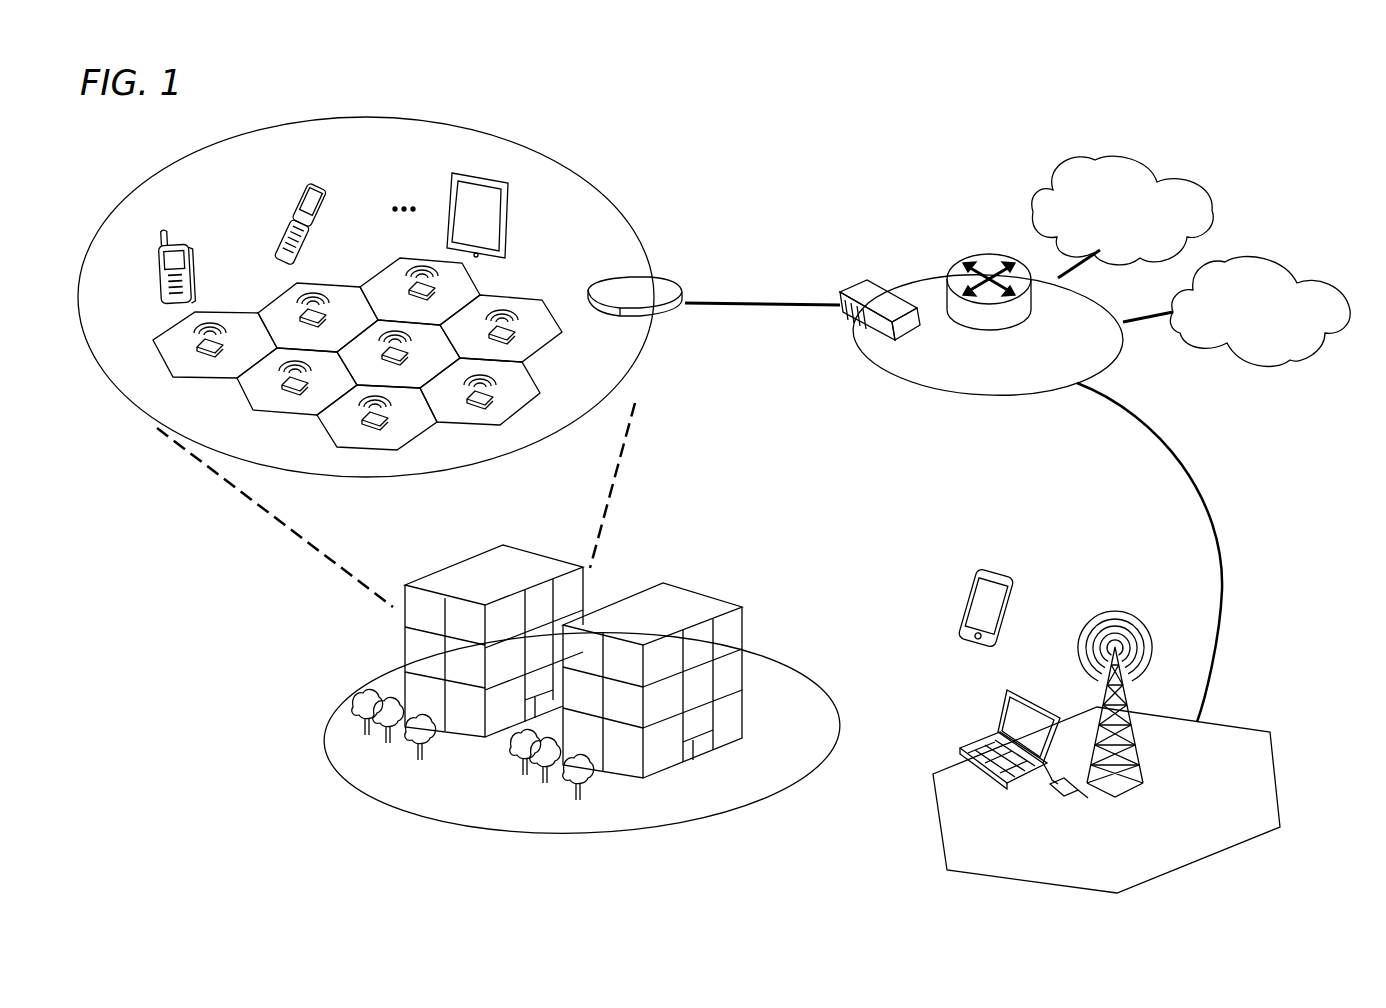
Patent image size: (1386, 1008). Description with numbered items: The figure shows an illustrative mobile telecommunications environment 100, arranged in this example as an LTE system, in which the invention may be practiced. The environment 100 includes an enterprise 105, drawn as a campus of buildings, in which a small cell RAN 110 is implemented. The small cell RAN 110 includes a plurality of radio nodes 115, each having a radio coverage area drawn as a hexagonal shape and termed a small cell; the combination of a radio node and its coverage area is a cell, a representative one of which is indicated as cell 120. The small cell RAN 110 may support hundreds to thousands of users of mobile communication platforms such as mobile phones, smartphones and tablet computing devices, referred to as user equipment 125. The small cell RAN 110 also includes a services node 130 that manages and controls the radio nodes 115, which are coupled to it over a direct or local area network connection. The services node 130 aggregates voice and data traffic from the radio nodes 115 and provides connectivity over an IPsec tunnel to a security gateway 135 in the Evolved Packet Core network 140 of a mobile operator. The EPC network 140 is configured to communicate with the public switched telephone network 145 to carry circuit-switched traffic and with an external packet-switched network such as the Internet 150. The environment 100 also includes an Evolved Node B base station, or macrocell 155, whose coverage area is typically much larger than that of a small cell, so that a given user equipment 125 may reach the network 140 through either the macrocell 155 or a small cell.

The mobile telecommunications environment 100 is at (789, 163).
The enterprise 105 is at (325, 730).
The small cell RAN 110 is at (573, 171).
The radio node 115 is at (515, 330).
The cell 120 is at (528, 307).
The user equipment 125 is at (197, 260).
The services node 130 is at (670, 283).
The security gateway 135 is at (867, 280).
The Evolved Packet Core network 140 is at (953, 397).
The public switched telephone network 145 is at (1273, 262).
The Internet 150 is at (1087, 161).
The macrocell 155 is at (1255, 732).